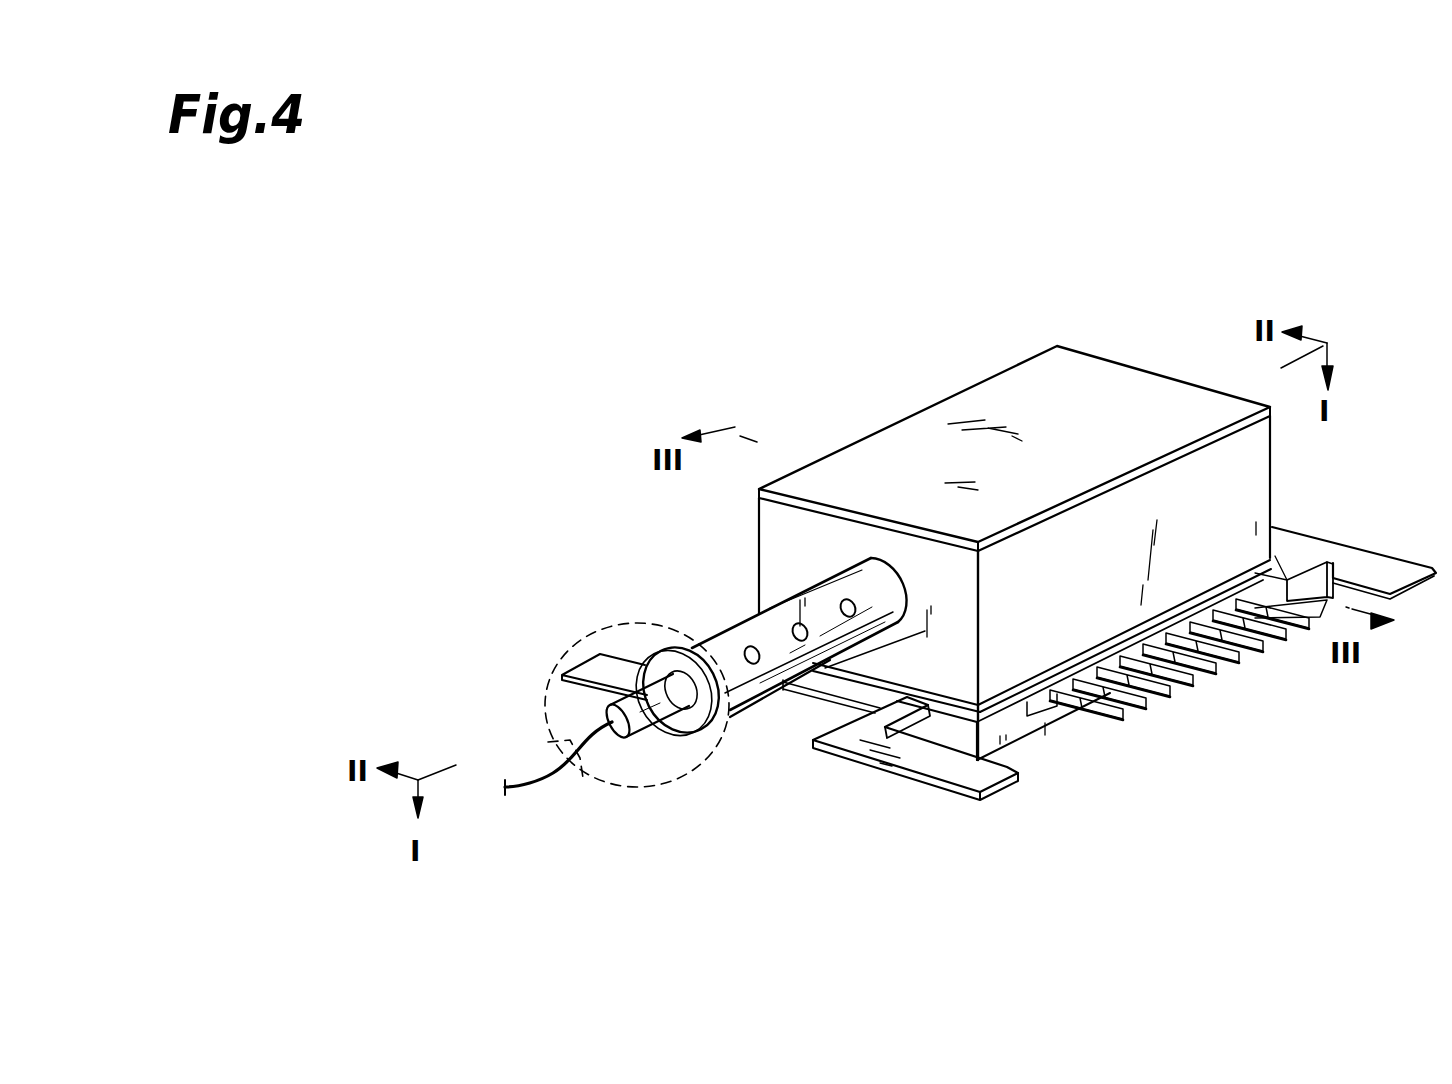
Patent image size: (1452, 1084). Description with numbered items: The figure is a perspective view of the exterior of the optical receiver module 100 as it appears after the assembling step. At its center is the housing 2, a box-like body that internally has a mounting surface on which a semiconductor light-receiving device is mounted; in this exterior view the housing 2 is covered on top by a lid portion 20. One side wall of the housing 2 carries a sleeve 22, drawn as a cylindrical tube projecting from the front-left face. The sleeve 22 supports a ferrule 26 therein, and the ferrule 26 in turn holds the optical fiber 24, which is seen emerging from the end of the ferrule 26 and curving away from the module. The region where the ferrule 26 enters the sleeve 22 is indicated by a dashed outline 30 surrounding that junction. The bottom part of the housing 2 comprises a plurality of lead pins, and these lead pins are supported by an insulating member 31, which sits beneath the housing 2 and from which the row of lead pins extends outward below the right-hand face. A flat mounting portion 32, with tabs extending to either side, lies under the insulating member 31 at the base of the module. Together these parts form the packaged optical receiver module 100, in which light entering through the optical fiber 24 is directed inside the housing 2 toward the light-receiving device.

The optical receiver module 100 is at (868, 404).
The housing 2 is at (1252, 500).
The lid 20 is at (1097, 381).
The sleeve 22 is at (737, 636).
The optical fiber 24 is at (550, 790).
The ferrule 26 is at (657, 727).
The sealing portion 30 is at (620, 635).
The insulating member 31 is at (1057, 720).
The lead frame 32 is at (1025, 747).